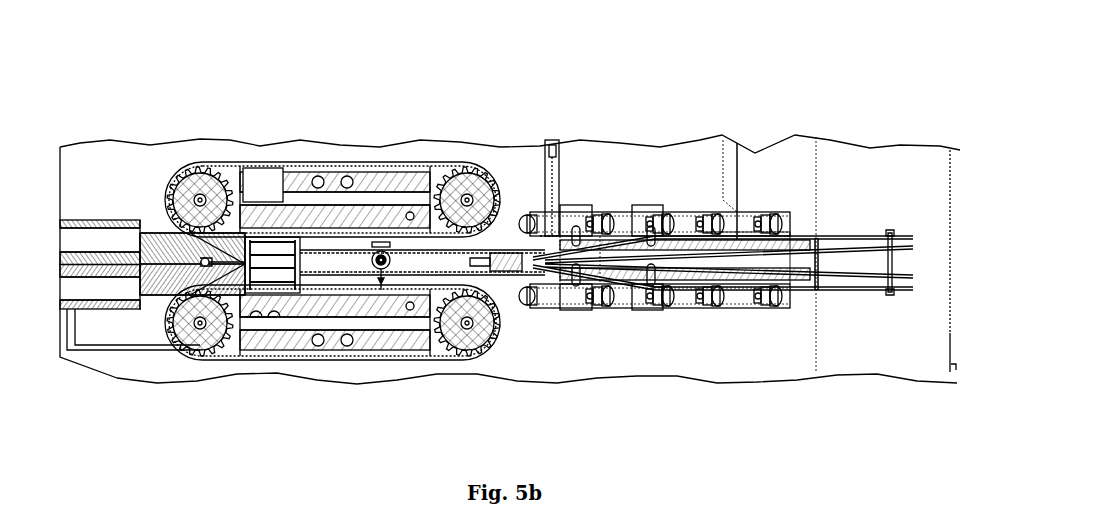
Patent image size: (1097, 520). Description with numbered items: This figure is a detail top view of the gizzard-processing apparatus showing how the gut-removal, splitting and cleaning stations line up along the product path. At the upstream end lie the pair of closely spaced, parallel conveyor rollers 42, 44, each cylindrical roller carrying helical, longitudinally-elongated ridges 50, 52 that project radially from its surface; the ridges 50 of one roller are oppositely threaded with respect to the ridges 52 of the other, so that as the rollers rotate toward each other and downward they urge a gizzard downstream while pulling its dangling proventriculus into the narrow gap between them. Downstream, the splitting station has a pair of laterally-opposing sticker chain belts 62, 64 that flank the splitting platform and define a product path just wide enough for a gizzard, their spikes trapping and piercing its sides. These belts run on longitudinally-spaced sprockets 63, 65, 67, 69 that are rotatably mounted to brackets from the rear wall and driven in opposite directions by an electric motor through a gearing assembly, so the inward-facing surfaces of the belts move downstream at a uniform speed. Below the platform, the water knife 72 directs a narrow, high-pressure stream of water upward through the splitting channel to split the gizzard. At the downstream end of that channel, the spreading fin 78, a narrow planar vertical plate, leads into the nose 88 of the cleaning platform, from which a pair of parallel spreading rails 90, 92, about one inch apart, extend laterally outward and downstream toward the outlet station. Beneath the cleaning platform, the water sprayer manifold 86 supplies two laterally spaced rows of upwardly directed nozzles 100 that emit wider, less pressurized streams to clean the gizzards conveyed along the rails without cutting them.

The conveyor roller 42 is at (160, 292).
The conveyor roller 44 is at (160, 245).
The helical ridges 50 is at (233, 278).
The helical ridges 52 is at (221, 240).
The sticker chain belt 62 is at (290, 356).
The sprocket 63 is at (197, 335).
The sticker chain belt 64 is at (345, 168).
The sprocket 65 is at (195, 188).
The sprocket 67 is at (462, 335).
The sprocket 69 is at (460, 186).
The water knife 72 is at (381, 290).
The spreading fin 78 is at (480, 246).
The water sprayer manifold 86 is at (625, 225).
The nose 88 is at (528, 238).
The spreading rail 90 is at (832, 288).
The spreading rail 92 is at (833, 238).
The nozzles 100 is at (770, 306).